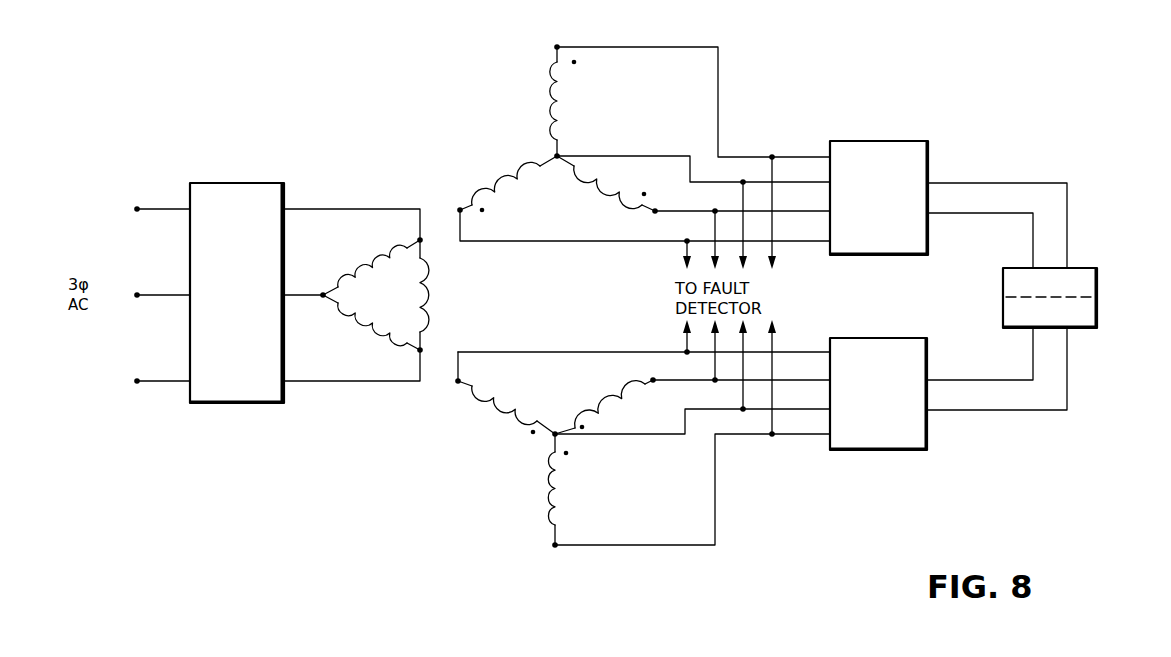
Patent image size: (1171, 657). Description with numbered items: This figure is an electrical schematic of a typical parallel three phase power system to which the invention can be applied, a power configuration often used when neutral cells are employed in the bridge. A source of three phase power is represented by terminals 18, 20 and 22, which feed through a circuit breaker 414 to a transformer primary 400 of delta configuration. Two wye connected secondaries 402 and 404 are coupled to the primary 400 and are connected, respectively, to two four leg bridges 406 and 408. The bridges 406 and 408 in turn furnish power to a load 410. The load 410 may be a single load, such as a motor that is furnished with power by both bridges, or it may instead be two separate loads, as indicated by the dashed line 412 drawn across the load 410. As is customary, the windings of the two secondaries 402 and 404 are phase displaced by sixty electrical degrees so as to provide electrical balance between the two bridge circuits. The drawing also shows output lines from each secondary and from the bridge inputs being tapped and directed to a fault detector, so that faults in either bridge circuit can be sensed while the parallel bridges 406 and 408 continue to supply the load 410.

The terminal 18 is at (133, 209).
The terminal 20 is at (151, 279).
The terminal 22 is at (129, 381).
The transformer primary 400 is at (399, 304).
The wye connected secondary 402 is at (621, 131).
The wye connected secondary 404 is at (625, 487).
The four leg bridge 406 is at (929, 141).
The four leg bridge 408 is at (927, 451).
The load 410 is at (1097, 268).
The dashed line 412 is at (1090, 297).
The circuit breaker 414 is at (253, 182).